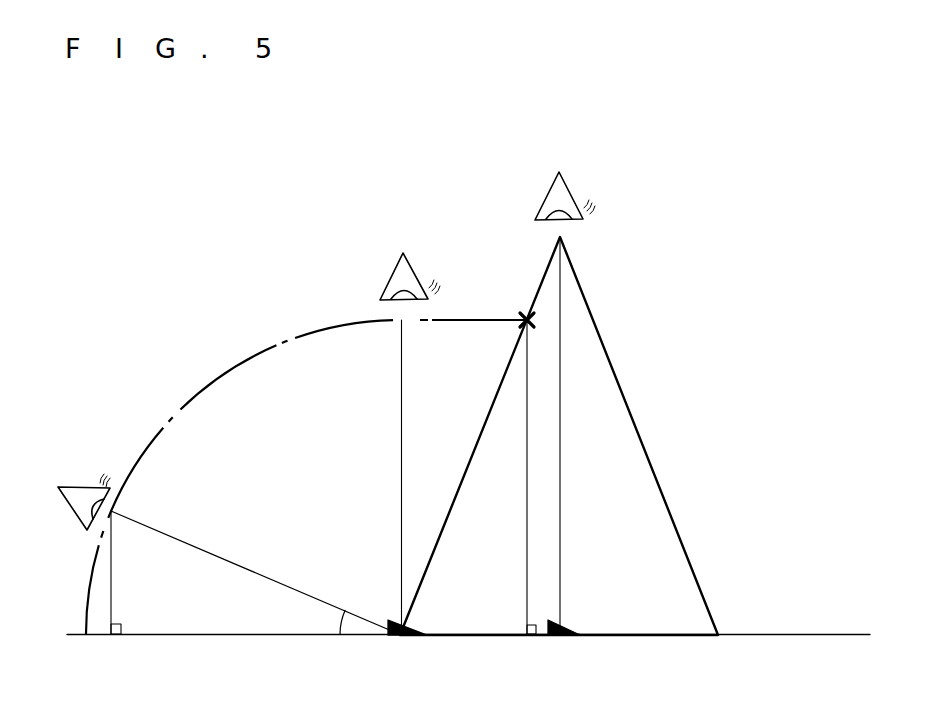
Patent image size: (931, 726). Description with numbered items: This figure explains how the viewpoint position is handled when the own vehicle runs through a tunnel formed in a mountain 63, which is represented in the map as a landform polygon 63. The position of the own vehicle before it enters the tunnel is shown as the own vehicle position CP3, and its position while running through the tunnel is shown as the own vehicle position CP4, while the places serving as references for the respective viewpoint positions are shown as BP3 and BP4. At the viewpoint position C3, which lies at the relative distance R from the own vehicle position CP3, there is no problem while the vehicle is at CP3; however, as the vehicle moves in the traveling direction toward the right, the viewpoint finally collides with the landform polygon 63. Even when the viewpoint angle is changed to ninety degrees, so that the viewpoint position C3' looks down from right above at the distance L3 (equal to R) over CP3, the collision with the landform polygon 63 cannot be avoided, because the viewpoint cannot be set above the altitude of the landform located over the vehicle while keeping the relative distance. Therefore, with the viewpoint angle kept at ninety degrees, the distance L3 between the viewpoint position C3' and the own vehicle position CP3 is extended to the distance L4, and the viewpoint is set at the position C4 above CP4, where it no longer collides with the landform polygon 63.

The mountain (landform polygon) 63 is at (622, 394).
The viewpoint position C3 is at (84, 489).
The viewpoint position C3' is at (416, 276).
The viewpoint position C4 is at (574, 196).
The distance L3 is at (402, 357).
The distance L4 is at (560, 460).
The relative distance R is at (222, 558).
The reference place BP3 is at (122, 591).
The own vehicle position CP3 is at (404, 646).
The own vehicle position CP4 is at (561, 646).
The reference place BP4 is at (561, 670).